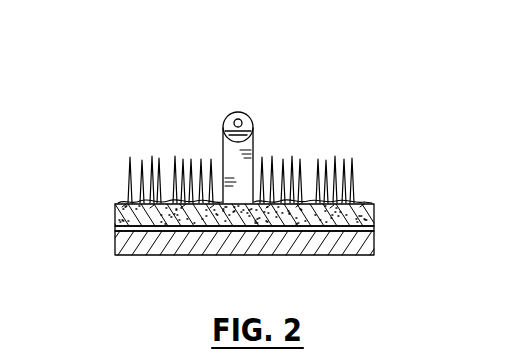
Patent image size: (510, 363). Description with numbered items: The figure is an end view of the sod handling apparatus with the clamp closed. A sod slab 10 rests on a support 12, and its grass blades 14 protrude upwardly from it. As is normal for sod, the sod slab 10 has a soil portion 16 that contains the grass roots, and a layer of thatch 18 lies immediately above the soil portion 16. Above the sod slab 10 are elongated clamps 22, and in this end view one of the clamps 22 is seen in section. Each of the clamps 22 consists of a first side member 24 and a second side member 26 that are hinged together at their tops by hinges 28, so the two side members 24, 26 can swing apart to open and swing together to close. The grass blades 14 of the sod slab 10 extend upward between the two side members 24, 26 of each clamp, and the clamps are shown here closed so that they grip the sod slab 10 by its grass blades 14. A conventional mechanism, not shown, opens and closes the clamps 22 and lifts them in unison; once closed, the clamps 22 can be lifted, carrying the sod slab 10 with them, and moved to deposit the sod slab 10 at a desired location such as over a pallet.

The sod slab 10 is at (378, 218).
The support 12 is at (370, 248).
The grass blades 14 is at (354, 172).
The soil portion 16 is at (117, 218).
The thatch 18 is at (127, 203).
The elongated clamps 22 is at (255, 134).
The first side member 24 is at (224, 148).
The second side member 26 is at (254, 148).
The hinges 28 is at (238, 112).